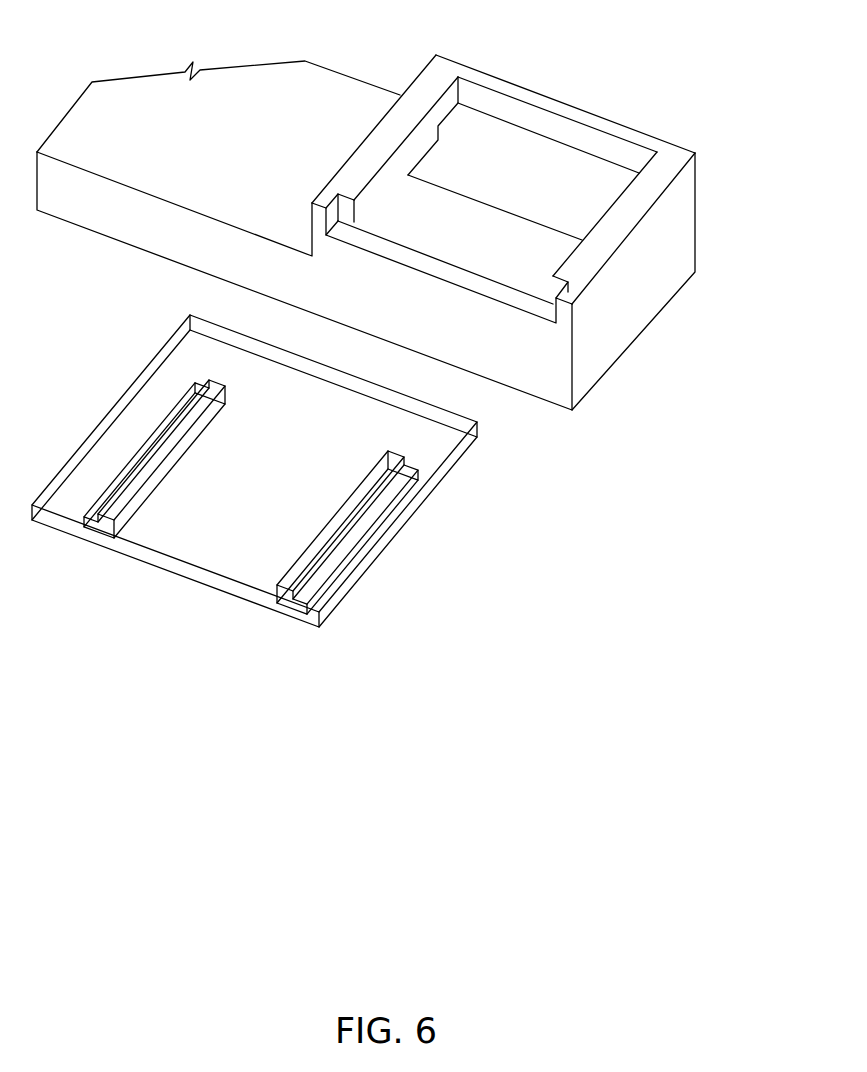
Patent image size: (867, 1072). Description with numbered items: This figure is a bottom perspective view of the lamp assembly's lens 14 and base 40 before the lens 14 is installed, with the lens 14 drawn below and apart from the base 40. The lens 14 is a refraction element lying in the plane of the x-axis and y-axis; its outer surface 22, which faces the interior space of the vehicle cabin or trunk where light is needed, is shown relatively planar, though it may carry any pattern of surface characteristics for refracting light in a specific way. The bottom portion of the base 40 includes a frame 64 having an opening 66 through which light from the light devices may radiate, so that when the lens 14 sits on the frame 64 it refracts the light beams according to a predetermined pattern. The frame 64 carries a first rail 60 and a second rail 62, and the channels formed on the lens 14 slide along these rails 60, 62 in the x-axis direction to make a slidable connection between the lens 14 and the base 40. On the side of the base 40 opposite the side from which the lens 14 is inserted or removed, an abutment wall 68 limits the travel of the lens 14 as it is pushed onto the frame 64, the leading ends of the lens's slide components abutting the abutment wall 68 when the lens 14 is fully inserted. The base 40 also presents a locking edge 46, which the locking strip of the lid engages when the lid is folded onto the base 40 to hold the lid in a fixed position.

The lens 14 is at (254, 482).
The outer surface 22 is at (163, 378).
The base 40 is at (623, 320).
The locking edge 46 is at (405, 257).
The first rail 60 is at (527, 165).
The second rail 62 is at (433, 83).
The frame 64 is at (641, 128).
The opening 66 is at (494, 146).
The abutment wall 68 is at (518, 185).